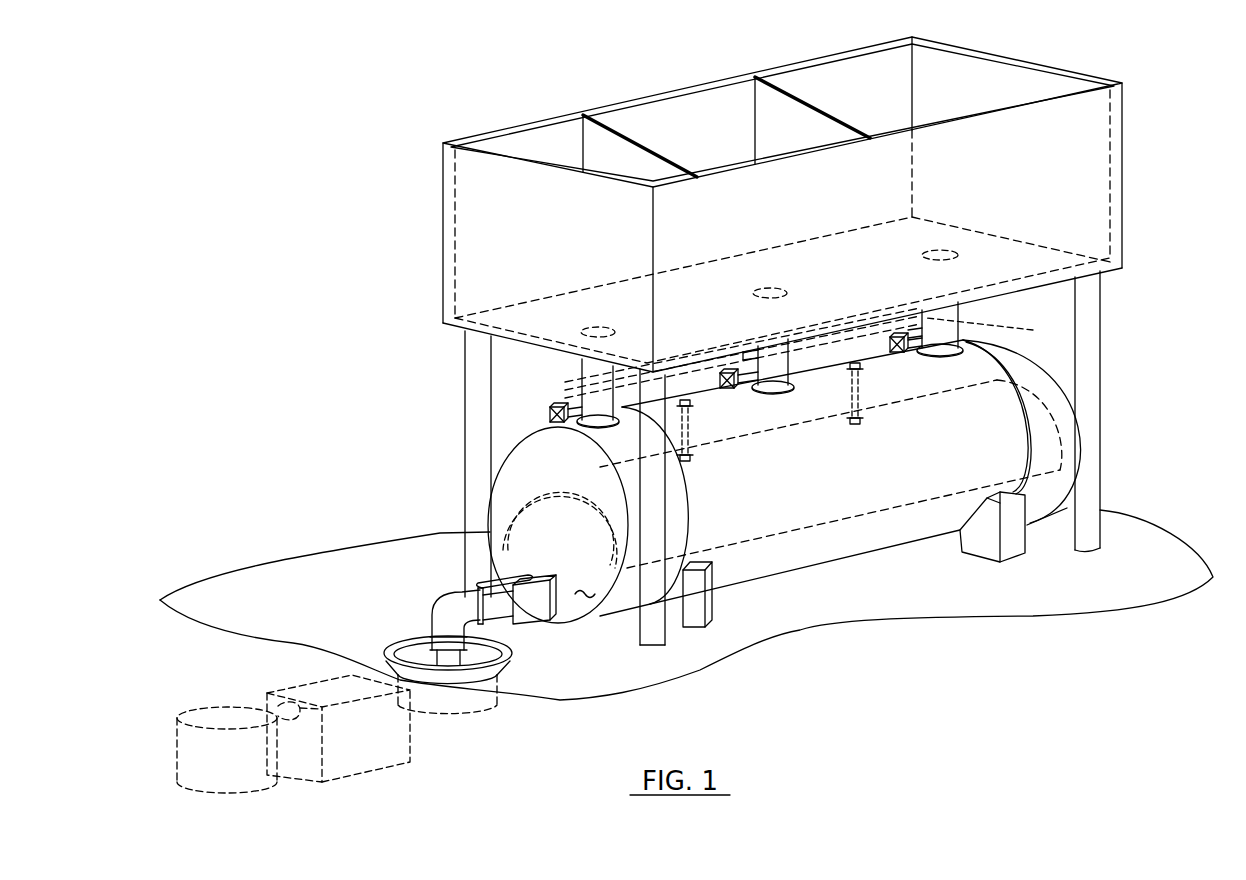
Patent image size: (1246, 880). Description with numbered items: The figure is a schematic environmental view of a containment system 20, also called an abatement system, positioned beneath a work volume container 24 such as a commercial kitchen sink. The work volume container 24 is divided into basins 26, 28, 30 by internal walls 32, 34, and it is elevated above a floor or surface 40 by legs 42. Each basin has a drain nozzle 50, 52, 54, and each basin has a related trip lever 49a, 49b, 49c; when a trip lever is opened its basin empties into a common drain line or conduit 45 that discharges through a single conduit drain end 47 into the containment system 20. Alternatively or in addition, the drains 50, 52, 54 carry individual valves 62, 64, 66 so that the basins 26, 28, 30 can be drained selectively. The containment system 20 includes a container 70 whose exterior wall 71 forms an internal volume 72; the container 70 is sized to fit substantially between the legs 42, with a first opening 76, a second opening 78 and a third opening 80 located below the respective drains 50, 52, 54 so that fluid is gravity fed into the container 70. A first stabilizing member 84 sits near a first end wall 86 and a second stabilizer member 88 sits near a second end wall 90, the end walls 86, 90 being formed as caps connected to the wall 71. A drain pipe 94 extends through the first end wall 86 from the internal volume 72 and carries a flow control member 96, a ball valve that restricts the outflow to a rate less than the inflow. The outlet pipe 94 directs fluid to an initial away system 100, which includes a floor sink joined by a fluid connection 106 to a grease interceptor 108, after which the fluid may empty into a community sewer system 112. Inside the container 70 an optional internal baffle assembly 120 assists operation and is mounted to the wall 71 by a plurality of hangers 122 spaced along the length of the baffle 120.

The containment system 20 is at (752, 668).
The work volume container 24 is at (438, 213).
The basin 26 is at (522, 143).
The basin 28 is at (667, 108).
The basin 30 is at (984, 85).
The internal wall 32 is at (613, 125).
The internal wall 34 is at (777, 80).
The floor or surface 40 is at (1145, 585).
The legs 42 is at (465, 372).
The common drain line or conduit 45 is at (832, 322).
The single conduit drain end 47 is at (993, 327).
The trip lever 49a is at (598, 326).
The trip lever 49b is at (770, 288).
The trip lever 49c is at (940, 250).
The drain nozzle 50 is at (580, 378).
The drain nozzle 52 is at (745, 356).
The drain nozzle 54 is at (960, 316).
The valve 62 is at (548, 415).
The valve 64 is at (727, 392).
The valve 66 is at (900, 357).
The container 70 is at (752, 592).
The exterior wall 71 is at (800, 573).
The internal volume 72 is at (591, 600).
The first opening 76 is at (672, 478).
The second opening 78 is at (773, 395).
The third opening 80 is at (947, 360).
The first stabilizing member 84 is at (697, 610).
The first end wall 86 is at (512, 467).
The second stabilizer member 88 is at (1012, 540).
The second end wall 90 is at (1063, 373).
The drain pipe or outlet pipe 94 is at (440, 610).
The flow control member 96 is at (462, 592).
The initial away system 100 is at (232, 562).
The fluid connection 106 is at (455, 703).
The grease interceptor 108 is at (415, 745).
The community sewer system 112 is at (200, 712).
The internal baffle assembly 120 is at (510, 502).
The hanger 122 is at (698, 434).